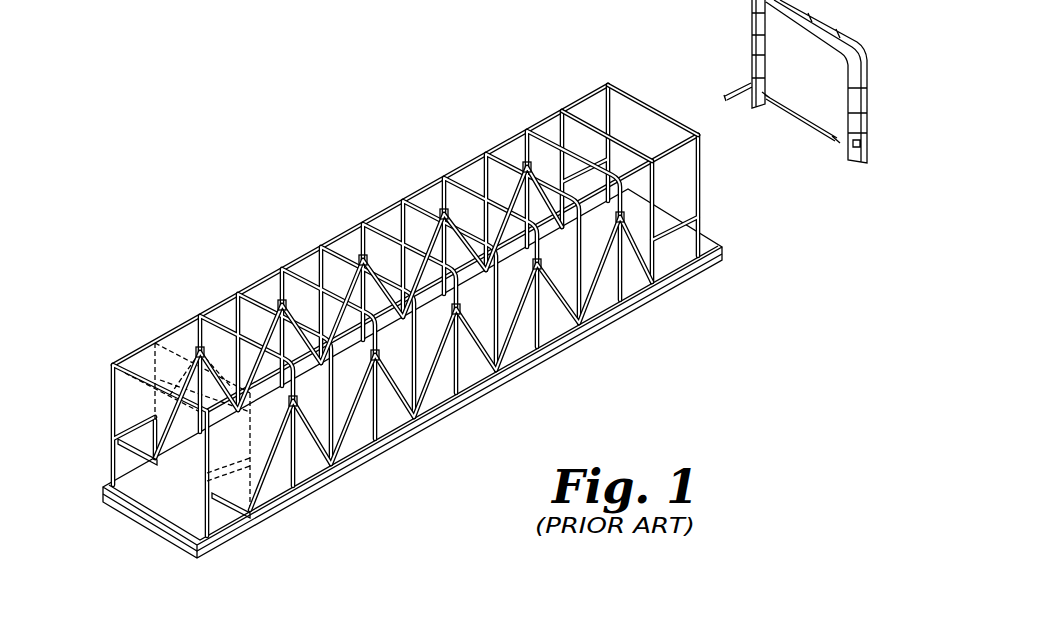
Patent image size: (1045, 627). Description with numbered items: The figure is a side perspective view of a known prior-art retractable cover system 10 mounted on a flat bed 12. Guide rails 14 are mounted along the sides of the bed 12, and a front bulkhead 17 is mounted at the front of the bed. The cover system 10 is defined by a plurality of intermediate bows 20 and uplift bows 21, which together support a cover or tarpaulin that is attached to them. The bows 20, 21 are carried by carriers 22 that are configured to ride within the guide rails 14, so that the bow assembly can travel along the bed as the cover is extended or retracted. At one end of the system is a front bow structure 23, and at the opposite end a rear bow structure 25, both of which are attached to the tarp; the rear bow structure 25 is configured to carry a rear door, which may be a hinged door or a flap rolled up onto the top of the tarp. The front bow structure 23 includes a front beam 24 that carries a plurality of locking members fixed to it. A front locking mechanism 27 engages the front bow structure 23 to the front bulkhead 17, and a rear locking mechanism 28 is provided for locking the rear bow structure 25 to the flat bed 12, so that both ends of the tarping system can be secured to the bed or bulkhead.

The retractable cover system 10 is at (403, 308).
The flat bed 12 is at (381, 392).
The guide rails 14 is at (103, 489).
The front bulkhead 17 is at (774, 91).
The intermediate bows 20 is at (241, 292).
The uplift bows 21 is at (213, 312).
The carriers 22 is at (560, 350).
The front bow structure 23 is at (621, 83).
The front beam 24 is at (664, 151).
The rear bow structure 25 is at (112, 392).
The front locking mechanism 27 is at (777, 119).
The rear locking mechanism 28 is at (118, 452).